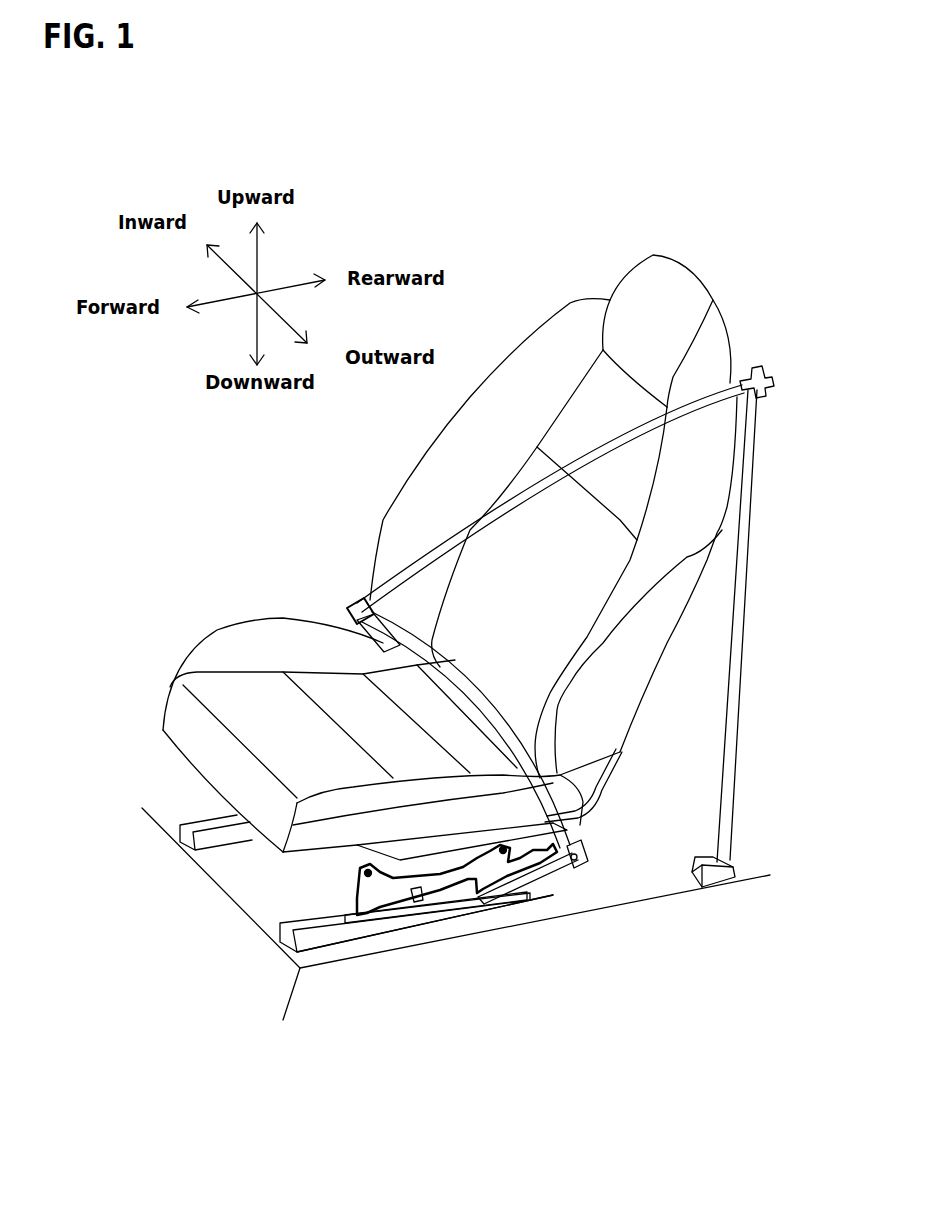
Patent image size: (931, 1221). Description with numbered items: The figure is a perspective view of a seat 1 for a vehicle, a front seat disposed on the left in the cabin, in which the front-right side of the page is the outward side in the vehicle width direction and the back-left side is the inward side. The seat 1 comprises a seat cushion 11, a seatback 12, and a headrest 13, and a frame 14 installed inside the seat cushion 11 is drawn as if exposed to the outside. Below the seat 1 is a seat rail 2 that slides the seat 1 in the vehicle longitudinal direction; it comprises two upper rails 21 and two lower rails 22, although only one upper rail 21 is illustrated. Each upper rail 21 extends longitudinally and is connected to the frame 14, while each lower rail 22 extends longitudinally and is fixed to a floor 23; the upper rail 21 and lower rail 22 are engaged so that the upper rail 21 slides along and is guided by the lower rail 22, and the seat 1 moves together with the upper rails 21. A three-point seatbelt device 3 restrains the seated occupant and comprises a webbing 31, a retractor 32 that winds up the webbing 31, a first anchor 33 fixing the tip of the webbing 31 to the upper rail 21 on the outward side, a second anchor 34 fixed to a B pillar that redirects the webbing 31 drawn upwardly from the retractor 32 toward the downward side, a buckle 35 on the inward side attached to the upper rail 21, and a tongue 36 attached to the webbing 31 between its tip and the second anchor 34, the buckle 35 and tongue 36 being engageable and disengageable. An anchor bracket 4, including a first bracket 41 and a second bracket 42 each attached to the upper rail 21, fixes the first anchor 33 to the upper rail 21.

The seat 1 is at (457, 356).
The seat rail 2 is at (235, 918).
The seatbelt device 3 is at (742, 342).
The anchor bracket 4 is at (590, 851).
The seat cushion 11 is at (203, 628).
The seatback 12 is at (547, 306).
The headrest 13 is at (648, 256).
The frame 14 is at (617, 757).
The upper rail 21 is at (378, 920).
The lower rail 22 is at (180, 840).
The floor 23 is at (470, 930).
The webbing 31 is at (539, 492).
The retractor 32 is at (695, 860).
The first anchor 33 is at (578, 860).
The second anchor 34 is at (760, 372).
The buckle 35 is at (352, 628).
The tongue 36 is at (350, 605).
The first bracket 41 is at (358, 874).
The second bracket 42 is at (553, 870).